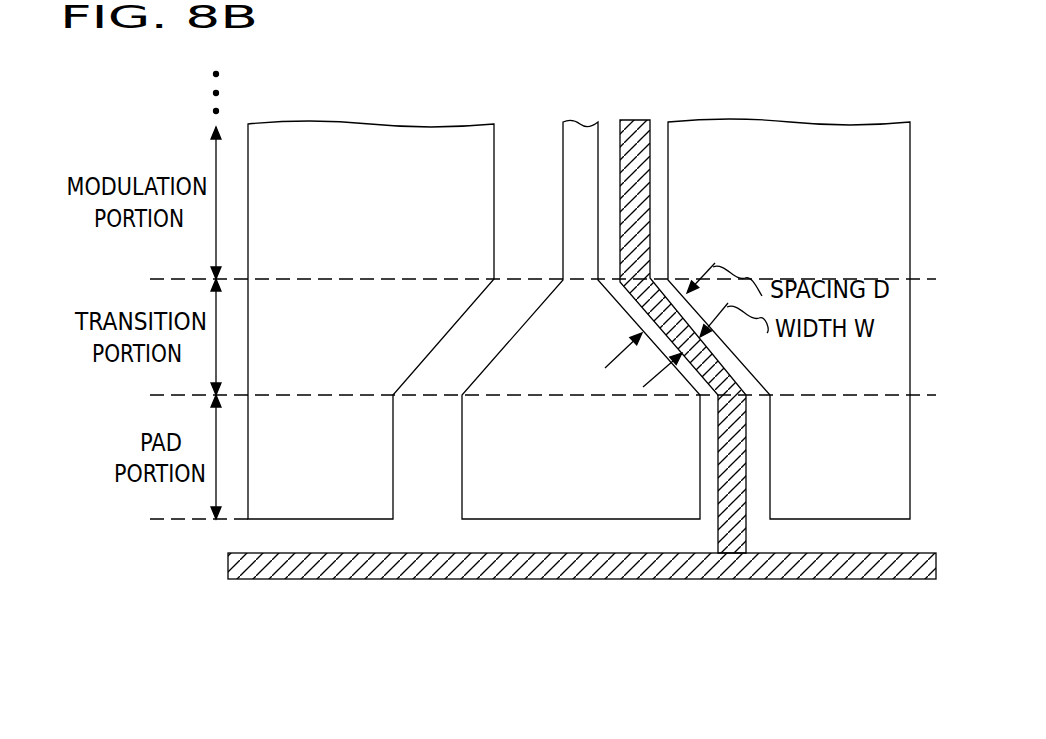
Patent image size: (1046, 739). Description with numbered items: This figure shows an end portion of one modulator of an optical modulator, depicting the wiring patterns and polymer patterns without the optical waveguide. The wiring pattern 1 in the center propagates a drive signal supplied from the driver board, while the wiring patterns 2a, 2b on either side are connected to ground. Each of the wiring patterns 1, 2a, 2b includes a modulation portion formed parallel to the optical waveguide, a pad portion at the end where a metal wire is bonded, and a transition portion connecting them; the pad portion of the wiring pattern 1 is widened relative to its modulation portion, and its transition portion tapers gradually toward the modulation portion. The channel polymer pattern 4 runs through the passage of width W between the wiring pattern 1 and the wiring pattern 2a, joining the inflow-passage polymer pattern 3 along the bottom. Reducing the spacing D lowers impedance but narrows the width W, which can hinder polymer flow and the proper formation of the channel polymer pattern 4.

The wiring pattern 1 is at (571, 122).
The wiring pattern 2a is at (830, 125).
The wiring pattern 2b is at (337, 124).
The inflow-passage polymer pattern 3 is at (687, 580).
The channel polymer pattern 4 is at (746, 465).